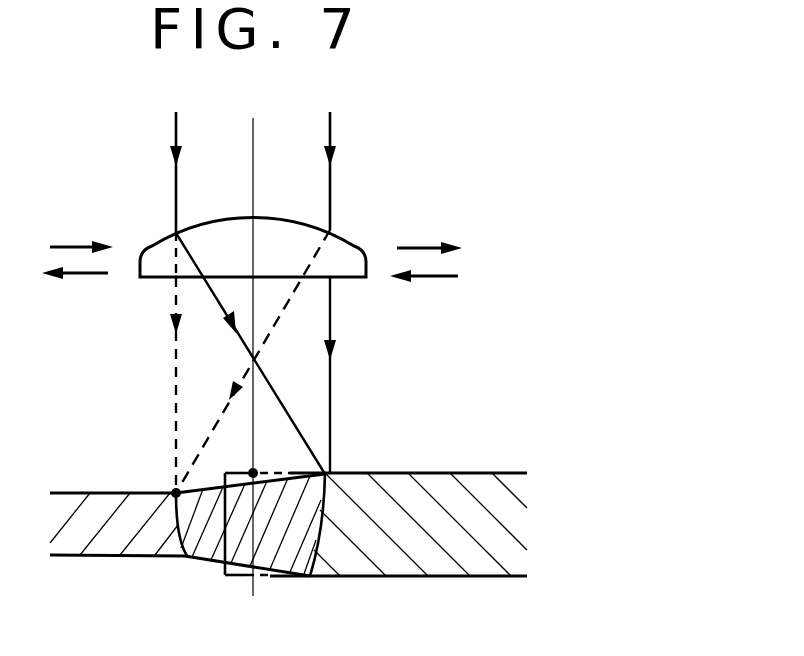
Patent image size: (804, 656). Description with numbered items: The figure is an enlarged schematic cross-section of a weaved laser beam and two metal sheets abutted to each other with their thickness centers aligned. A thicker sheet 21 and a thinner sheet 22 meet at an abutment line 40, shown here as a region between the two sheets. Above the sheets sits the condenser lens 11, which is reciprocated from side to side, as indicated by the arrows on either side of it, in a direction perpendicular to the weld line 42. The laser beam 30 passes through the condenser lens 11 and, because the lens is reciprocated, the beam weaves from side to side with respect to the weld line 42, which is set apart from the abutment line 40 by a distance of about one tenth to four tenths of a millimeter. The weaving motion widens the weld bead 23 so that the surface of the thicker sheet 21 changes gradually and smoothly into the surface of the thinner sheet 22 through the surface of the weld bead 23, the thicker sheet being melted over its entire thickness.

The laser beam 30 is at (343, 115).
The condenser lens 11 is at (162, 241).
The thinner sheet 22 is at (112, 500).
The thicker sheet 21 is at (381, 488).
The weld bead 23 is at (225, 562).
The abutment line 40 is at (226, 508).
The weld line 42 is at (253, 473).